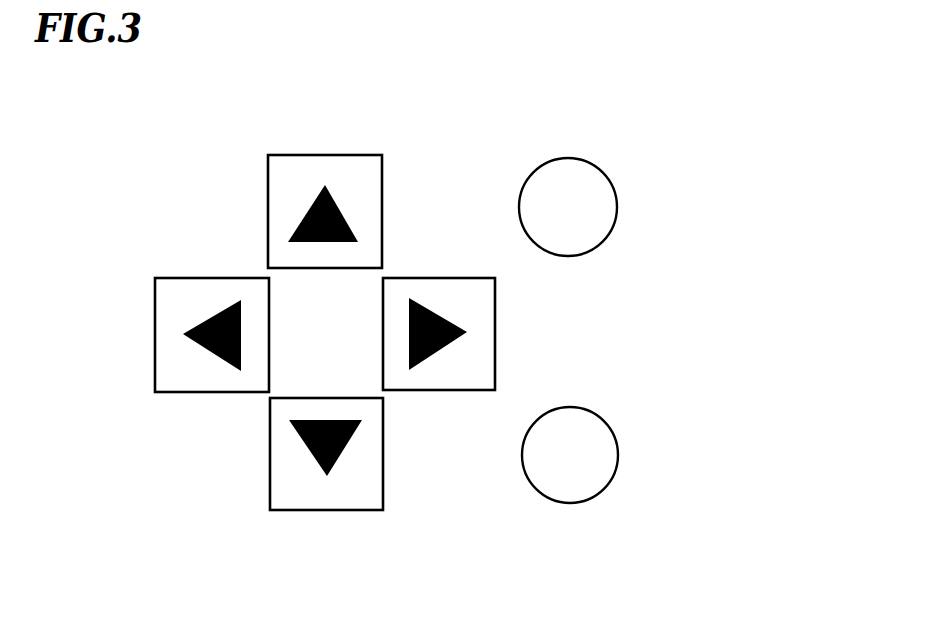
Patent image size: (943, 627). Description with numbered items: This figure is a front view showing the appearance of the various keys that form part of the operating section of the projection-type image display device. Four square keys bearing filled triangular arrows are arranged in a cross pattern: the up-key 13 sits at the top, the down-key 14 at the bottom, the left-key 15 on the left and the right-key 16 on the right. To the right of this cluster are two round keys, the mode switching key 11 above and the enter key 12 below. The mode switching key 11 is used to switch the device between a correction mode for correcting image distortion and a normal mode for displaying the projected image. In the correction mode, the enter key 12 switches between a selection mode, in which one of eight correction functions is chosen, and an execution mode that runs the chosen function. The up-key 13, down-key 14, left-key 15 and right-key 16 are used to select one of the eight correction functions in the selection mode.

The mode switching key 11 is at (610, 179).
The enter key 12 is at (617, 440).
The up-key 13 is at (357, 155).
The down-key 14 is at (318, 510).
The left-key 15 is at (207, 278).
The right-key 16 is at (495, 342).